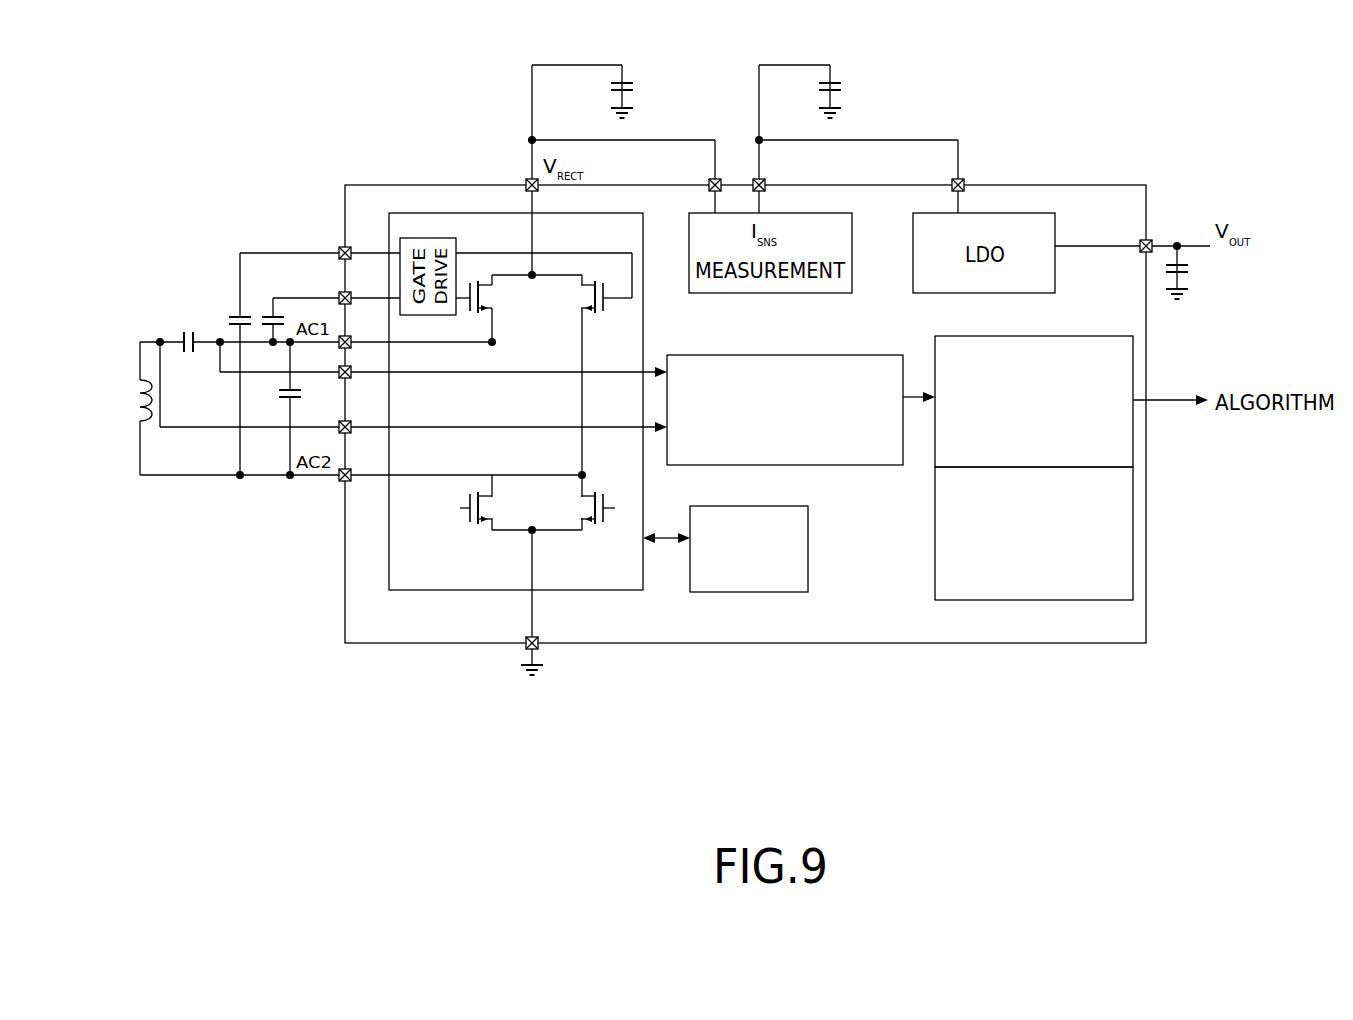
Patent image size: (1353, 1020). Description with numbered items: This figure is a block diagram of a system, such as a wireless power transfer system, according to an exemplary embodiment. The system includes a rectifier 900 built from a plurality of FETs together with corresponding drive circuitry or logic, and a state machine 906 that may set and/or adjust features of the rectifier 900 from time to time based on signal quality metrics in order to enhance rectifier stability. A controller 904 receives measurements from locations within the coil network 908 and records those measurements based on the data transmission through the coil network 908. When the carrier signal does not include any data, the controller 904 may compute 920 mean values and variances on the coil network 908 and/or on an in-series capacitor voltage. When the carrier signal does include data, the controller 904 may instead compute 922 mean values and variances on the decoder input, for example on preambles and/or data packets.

The rectifier 900 is at (389, 228).
The controller 904 is at (745, 355).
The state machine 906 is at (808, 567).
The coil network 908 is at (130, 386).
The compute mean values and variances when no data is present 920 is at (1134, 375).
The compute mean values and variances when data is present 922 is at (1134, 543).